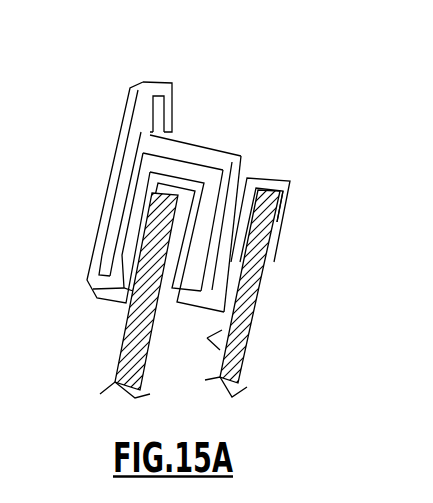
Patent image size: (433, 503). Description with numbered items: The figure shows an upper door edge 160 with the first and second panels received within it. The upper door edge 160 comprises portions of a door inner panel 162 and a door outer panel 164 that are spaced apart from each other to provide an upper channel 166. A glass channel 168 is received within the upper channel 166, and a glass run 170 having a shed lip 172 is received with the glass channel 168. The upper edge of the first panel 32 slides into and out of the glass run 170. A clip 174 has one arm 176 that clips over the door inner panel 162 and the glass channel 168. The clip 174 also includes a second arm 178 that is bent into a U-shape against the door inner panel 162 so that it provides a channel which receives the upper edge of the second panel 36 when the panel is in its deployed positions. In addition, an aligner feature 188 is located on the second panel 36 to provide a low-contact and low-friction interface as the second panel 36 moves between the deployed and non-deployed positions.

The upper door edge 160 is at (114, 86).
The door inner panel 162 is at (176, 137).
The door outer panel 164 is at (161, 82).
The upper channel 166 is at (120, 150).
The glass channel 168 is at (185, 153).
The glass run 170 is at (197, 170).
The first panel 32 is at (213, 192).
The clip 174 is at (250, 179).
The second panel 36 is at (284, 194).
The second arm 178 is at (281, 224).
The shed lip 172 is at (128, 327).
The arm 176 is at (192, 298).
The aligner feature 188 is at (229, 347).